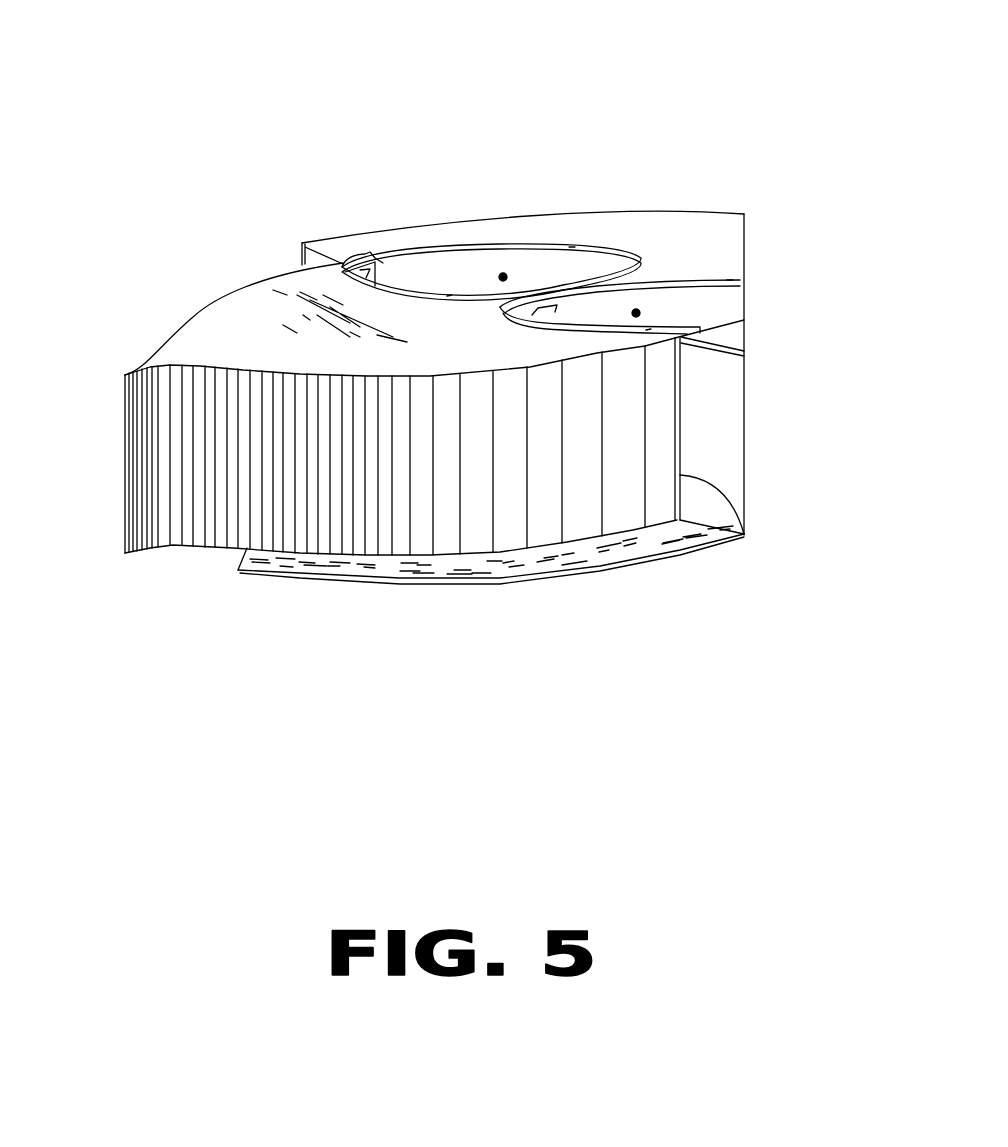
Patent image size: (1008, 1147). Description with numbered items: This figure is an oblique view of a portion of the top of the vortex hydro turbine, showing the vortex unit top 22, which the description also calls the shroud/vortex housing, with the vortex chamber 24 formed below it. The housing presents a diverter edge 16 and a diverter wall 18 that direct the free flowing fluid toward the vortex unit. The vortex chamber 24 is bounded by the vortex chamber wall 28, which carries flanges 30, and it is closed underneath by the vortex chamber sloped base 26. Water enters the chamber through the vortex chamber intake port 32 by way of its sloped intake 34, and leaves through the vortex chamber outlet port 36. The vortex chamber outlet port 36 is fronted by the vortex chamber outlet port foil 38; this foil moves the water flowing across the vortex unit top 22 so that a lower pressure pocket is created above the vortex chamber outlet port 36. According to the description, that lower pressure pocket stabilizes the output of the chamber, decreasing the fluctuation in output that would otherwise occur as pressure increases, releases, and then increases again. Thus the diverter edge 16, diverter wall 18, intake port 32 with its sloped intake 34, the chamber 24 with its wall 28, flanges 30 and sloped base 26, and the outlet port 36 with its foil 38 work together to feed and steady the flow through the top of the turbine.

The diverter edge 16 is at (125, 492).
The diverter wall 18 is at (147, 388).
The vortex unit top 22 is at (628, 230).
The vortex chamber 24 is at (503, 277).
The vortex chamber sloped base 26 is at (707, 500).
The vortex chamber wall 28 is at (435, 272).
The flanges 30 is at (385, 262).
The vortex chamber intake port 32 is at (317, 255).
The sloped intake 34 is at (447, 570).
The vortex chamber outlet port 36 is at (572, 247).
The vortex chamber outlet port foil 38 is at (450, 295).